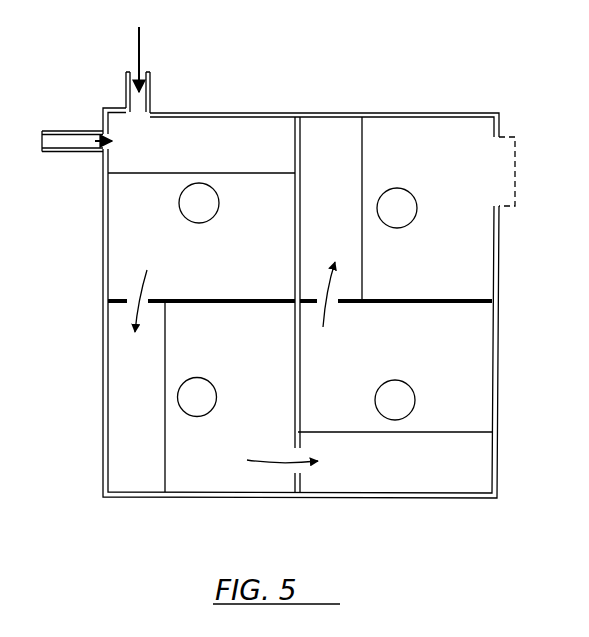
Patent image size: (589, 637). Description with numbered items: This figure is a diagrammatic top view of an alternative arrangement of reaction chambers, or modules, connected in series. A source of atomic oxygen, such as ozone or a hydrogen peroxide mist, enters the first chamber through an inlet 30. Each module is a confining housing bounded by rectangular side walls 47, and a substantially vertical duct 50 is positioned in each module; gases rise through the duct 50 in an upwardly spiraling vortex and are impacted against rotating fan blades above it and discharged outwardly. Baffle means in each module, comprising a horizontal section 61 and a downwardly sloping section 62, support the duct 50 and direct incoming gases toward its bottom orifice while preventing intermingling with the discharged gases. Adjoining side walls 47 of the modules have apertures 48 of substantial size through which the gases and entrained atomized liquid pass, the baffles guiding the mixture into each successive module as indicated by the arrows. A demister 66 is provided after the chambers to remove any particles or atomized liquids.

The inlet 30 is at (139, 40).
The side walls 47 is at (103, 197).
The apertures 48 is at (138, 298).
The vertical duct 50 is at (220, 195).
The horizontal section 61 is at (272, 123).
The downwardly sloping section 62 is at (110, 246).
The demister 66 is at (501, 135).